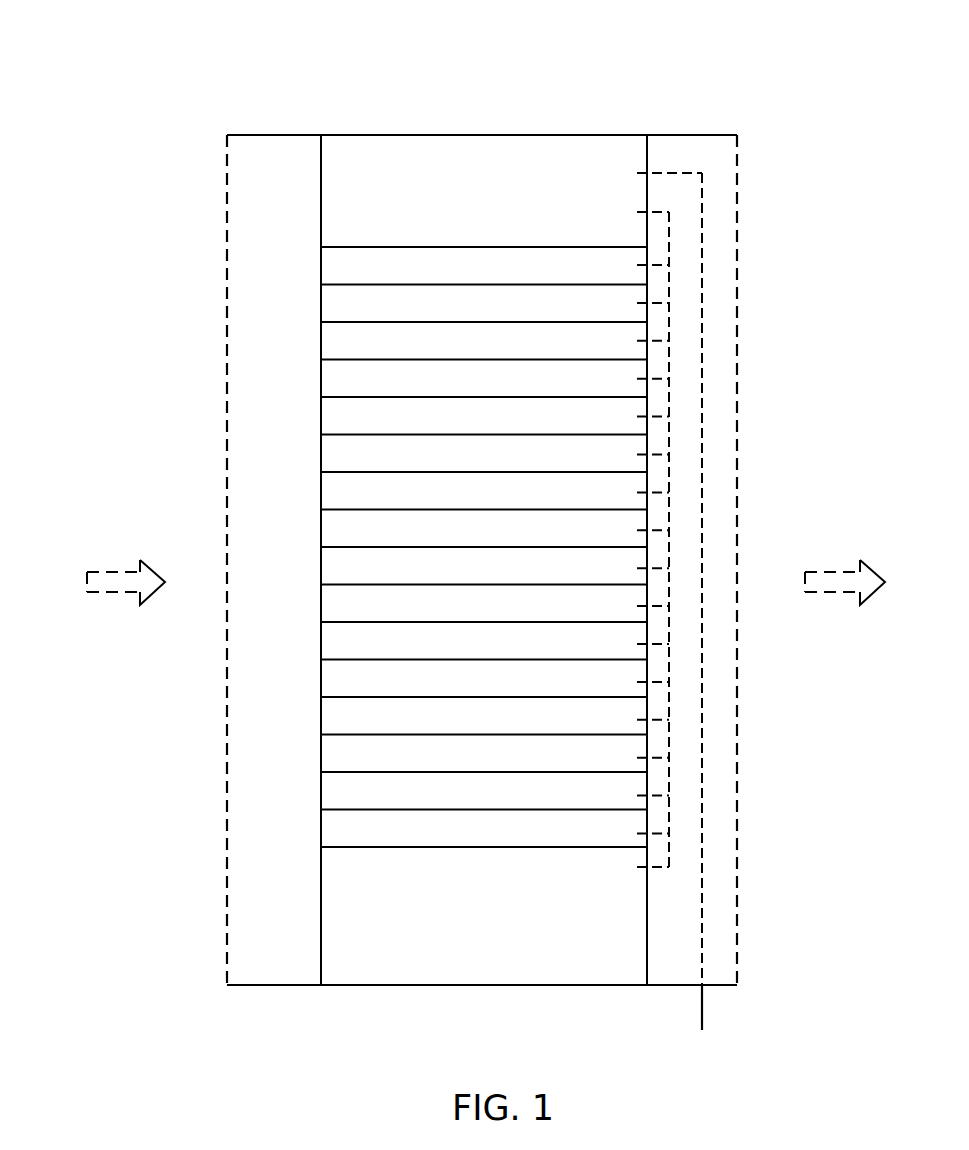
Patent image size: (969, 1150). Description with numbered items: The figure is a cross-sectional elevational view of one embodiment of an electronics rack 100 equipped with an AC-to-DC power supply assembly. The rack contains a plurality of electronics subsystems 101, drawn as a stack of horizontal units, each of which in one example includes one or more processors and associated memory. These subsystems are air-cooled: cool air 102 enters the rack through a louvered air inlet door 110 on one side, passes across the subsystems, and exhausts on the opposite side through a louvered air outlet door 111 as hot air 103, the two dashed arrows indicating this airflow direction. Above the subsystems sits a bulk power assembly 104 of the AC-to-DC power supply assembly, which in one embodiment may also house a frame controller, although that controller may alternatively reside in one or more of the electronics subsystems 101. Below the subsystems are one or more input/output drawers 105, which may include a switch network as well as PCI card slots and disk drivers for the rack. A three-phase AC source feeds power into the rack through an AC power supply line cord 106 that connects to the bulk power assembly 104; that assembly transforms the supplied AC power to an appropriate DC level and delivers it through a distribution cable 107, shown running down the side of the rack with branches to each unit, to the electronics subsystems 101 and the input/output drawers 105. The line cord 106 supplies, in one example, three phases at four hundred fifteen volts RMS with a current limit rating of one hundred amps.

The electronics rack 100 is at (393, 135).
The electronics subsystems 101 is at (338, 267).
The cool air 102 is at (114, 571).
The hot air 103 is at (835, 571).
The bulk power assembly 104 is at (512, 210).
The input/output (I/O) drawer 105 is at (512, 939).
The AC power supply line cord 106 is at (700, 1016).
The distribution cable 107 is at (670, 230).
The louvered air inlet door 110 is at (226, 769).
The louvered air outlet door 111 is at (739, 698).